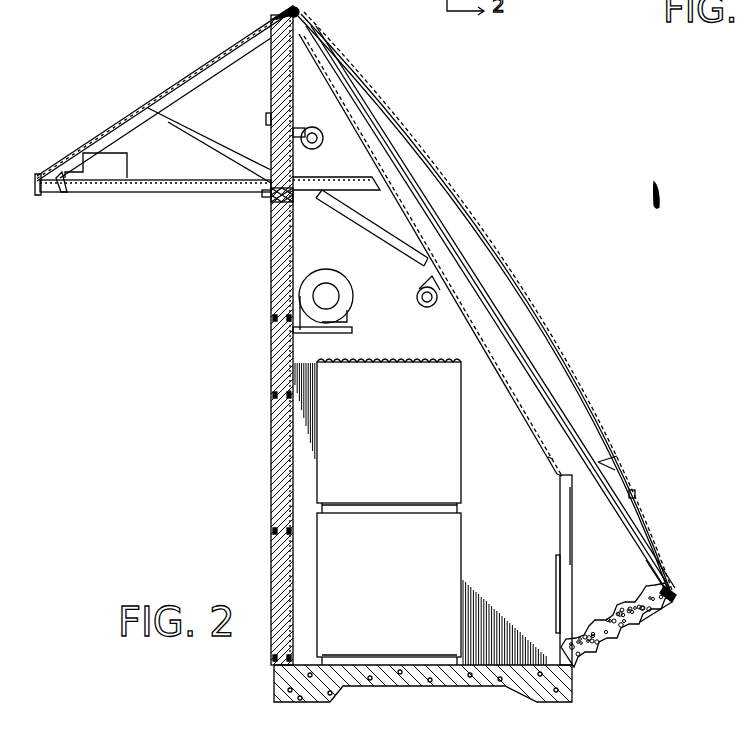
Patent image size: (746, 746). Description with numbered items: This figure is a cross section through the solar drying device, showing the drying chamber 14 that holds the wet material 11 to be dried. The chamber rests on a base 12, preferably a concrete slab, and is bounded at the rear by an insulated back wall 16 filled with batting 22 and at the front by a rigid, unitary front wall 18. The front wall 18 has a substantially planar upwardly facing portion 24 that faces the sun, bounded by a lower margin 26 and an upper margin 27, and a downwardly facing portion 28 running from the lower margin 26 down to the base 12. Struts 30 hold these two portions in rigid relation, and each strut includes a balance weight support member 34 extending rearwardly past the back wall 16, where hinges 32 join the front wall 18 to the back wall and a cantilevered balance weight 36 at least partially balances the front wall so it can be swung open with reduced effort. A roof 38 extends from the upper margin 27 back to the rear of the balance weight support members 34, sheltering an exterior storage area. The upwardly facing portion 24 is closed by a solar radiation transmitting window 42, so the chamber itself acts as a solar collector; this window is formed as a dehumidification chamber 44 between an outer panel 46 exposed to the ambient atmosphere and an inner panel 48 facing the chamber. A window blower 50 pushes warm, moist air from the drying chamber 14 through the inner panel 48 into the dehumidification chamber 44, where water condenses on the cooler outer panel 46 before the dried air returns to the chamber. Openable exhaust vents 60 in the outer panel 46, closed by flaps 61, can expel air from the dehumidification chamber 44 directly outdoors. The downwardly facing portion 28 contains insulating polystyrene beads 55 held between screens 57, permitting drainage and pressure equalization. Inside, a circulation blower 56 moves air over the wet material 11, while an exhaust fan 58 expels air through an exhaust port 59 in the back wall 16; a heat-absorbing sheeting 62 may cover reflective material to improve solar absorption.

The wet material 11 is at (463, 488).
The base 12 is at (382, 690).
The drying chamber 14 is at (295, 267).
The back wall 16 is at (272, 434).
The front wall 18 is at (328, 50).
The batting 22 is at (272, 382).
The upwardly facing portion 24 is at (657, 560).
The lower margin 26 is at (674, 593).
The upper margin 27 is at (300, 22).
The downwardly facing portion 28 is at (645, 623).
The strut 30 is at (560, 499).
The hinge 32 is at (268, 196).
The balance weight support member 34 is at (141, 192).
The balance weight 36 is at (128, 163).
The roof 38 is at (160, 96).
The window 42 is at (525, 298).
The dehumidification chamber 44 is at (570, 400).
The outer panel 46 is at (556, 355).
The inner panel 48 is at (527, 410).
The window blower 50 is at (430, 306).
The insulating polystyrene beads 55 is at (661, 612).
The circulation blower 56 is at (350, 284).
The screen 57 is at (627, 605).
The exhaust fan 58 is at (305, 130).
The exhaust port 59 is at (270, 128).
The exhaust vent 60 is at (598, 462).
The flap 61 is at (633, 495).
The heat-absorbing sheeting 62 is at (392, 358).